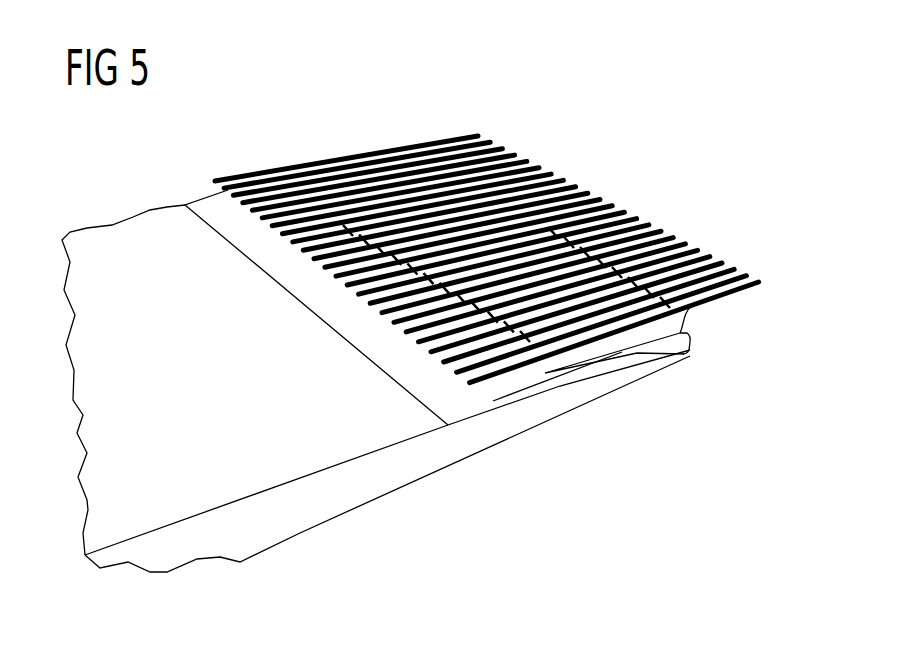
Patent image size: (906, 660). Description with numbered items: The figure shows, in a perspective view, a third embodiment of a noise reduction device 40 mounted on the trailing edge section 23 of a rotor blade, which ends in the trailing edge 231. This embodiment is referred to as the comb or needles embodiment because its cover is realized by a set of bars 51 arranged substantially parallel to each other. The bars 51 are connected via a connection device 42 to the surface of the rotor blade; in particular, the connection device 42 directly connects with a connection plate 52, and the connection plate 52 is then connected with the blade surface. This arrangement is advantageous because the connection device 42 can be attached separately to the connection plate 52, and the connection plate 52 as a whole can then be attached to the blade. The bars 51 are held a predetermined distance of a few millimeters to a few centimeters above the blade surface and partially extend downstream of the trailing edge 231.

The trailing edge section 23 is at (365, 442).
The trailing edge 231 is at (690, 342).
The noise reduction device 40 is at (472, 258).
The connection device 42 is at (626, 337).
The bars 51 is at (673, 236).
The connection plate 52 is at (497, 390).